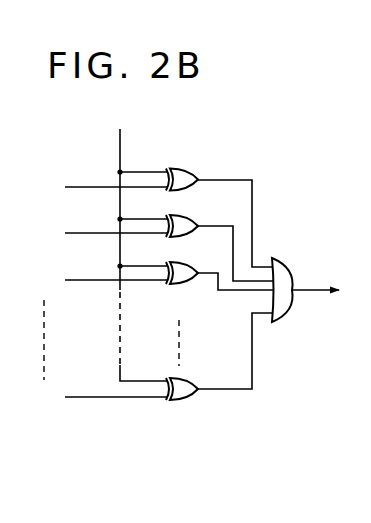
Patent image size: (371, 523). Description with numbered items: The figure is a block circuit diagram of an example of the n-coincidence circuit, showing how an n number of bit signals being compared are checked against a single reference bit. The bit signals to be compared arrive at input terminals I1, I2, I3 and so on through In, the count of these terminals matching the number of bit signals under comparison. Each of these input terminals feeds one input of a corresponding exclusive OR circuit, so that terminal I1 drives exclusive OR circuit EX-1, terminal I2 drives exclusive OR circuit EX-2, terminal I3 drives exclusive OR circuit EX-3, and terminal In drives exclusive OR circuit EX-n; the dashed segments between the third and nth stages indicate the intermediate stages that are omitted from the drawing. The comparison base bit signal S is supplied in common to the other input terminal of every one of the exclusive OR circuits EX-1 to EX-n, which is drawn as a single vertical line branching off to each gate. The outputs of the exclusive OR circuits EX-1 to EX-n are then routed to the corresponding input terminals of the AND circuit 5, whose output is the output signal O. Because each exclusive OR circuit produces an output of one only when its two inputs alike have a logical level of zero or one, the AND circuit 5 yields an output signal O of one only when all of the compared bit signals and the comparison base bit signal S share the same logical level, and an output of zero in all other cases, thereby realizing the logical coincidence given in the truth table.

The AND circuit 5 is at (288, 302).
The exclusive OR circuit EX-1 is at (175, 168).
The exclusive OR circuit EX-2 is at (185, 216).
The exclusive OR circuit EX-3 is at (181, 285).
The exclusive OR circuit EX-n is at (182, 400).
The comparison base bit signal S is at (140, 243).
The input terminal I1 is at (101, 187).
The input terminal I2 is at (101, 234).
The input terminal I3 is at (101, 281).
The input terminal In is at (101, 397).
The output signal O is at (327, 290).